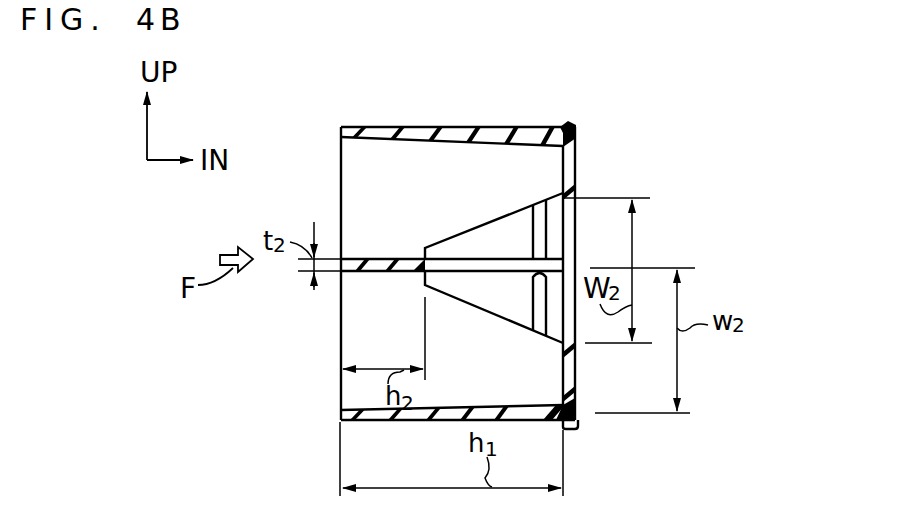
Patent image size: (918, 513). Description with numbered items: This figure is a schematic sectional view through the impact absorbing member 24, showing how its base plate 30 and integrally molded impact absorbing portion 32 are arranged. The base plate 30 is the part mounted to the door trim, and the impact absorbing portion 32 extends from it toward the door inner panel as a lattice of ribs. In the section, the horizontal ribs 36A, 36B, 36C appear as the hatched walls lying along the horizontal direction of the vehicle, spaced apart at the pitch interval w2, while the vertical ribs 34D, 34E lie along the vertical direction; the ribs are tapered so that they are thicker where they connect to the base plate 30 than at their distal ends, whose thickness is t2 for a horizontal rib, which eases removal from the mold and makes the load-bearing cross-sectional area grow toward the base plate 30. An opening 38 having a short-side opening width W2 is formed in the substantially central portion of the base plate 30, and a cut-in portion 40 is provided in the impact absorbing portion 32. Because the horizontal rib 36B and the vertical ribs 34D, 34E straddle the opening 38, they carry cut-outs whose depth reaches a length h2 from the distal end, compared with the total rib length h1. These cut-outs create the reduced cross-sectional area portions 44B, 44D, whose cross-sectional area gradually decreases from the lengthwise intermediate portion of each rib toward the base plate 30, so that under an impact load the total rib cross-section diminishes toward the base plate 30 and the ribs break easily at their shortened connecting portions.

The impact absorbing member 24 is at (295, 145).
The base plate 30 is at (579, 157).
The impact absorbing portion 32 is at (432, 123).
The vertical rib 34D is at (345, 318).
The vertical rib 34E is at (516, 222).
The horizontal rib 36A is at (378, 126).
The horizontal rib 36B is at (358, 257).
The horizontal rib 36C is at (357, 410).
The opening 38 is at (580, 228).
The cut-in portion 40 is at (519, 248).
The reduced cross-sectional area portion 44B is at (445, 320).
The reduced cross-sectional area portion 44D is at (507, 272).